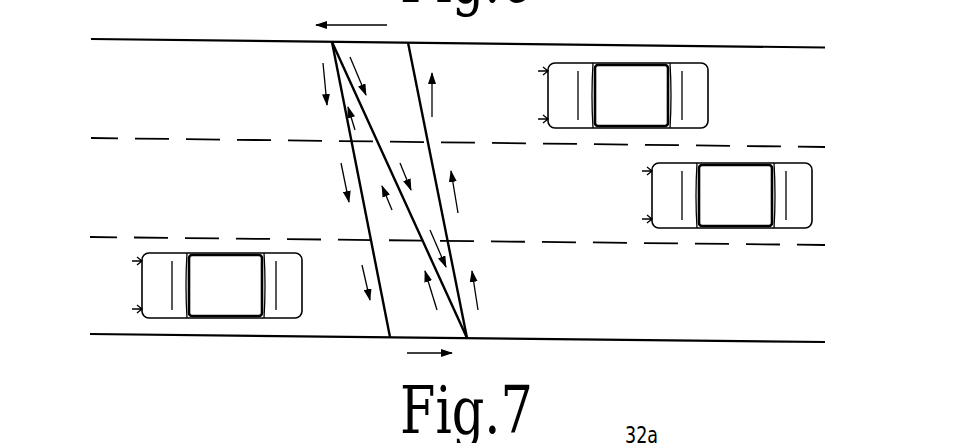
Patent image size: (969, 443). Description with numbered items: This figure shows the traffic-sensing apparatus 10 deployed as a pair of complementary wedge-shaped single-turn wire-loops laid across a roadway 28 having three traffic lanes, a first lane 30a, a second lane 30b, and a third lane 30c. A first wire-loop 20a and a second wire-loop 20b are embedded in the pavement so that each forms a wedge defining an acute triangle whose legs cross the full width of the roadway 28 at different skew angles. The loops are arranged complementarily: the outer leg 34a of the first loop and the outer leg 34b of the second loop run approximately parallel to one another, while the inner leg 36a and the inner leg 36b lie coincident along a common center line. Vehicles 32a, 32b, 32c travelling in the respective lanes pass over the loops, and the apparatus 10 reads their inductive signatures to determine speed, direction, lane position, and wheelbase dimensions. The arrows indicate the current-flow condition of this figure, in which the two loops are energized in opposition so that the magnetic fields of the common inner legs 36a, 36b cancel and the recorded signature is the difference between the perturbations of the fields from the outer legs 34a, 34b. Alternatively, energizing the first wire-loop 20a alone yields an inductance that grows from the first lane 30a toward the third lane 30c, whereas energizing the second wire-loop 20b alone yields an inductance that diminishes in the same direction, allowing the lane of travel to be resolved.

The apparatus 10 is at (361, 339).
The first wire-loop 20a is at (368, 223).
The second wire-loop 20b is at (430, 55).
The roadway 28 is at (723, 46).
The first lane 30a is at (796, 102).
The second lane 30b is at (172, 196).
The third lane 30c is at (756, 289).
The vehicle 32a is at (630, 78).
The vehicle 32b is at (743, 193).
The vehicle 32c is at (212, 300).
The outer leg 34a is at (345, 127).
The outer leg 34b is at (447, 233).
The inner leg 36a is at (451, 190).
The inner leg 36b is at (385, 158).